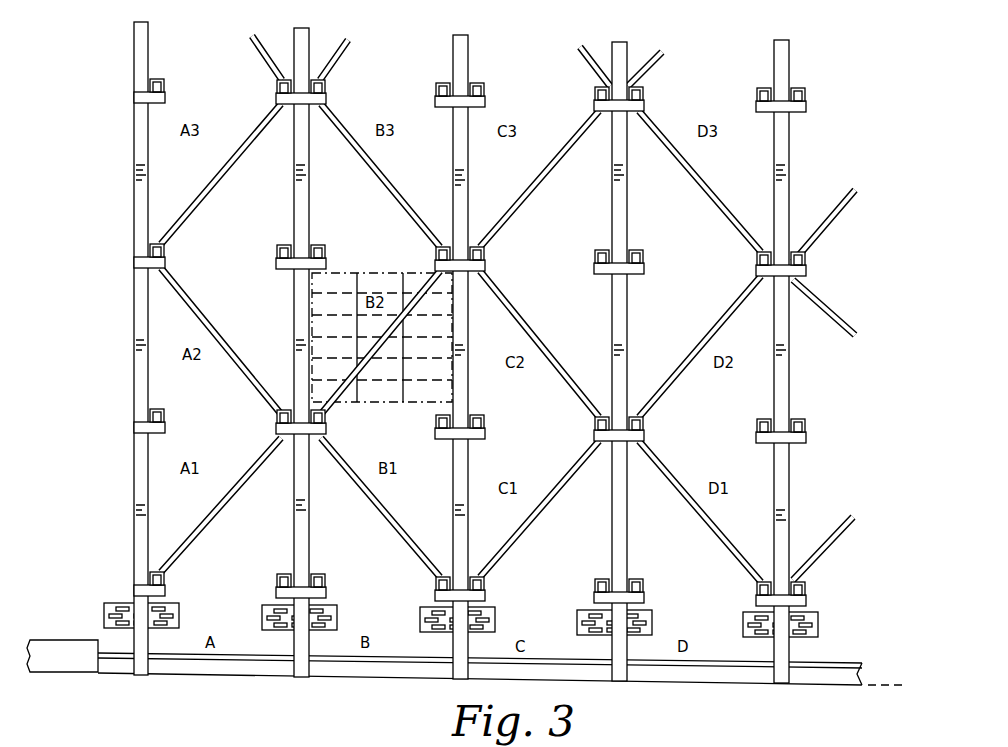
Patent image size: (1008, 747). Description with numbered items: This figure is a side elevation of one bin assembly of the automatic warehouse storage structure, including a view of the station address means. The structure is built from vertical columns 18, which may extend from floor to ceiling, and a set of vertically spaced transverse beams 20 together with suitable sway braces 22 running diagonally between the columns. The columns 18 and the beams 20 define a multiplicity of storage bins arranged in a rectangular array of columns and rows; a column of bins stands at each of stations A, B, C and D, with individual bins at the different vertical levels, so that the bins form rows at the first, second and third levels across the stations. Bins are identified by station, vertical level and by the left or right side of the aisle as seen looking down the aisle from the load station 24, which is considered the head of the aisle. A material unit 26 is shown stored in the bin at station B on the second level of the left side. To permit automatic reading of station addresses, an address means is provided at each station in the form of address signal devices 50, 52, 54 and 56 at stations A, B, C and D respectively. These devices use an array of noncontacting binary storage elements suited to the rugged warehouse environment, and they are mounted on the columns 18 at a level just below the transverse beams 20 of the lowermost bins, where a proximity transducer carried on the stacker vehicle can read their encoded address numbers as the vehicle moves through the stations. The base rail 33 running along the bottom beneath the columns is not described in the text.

The vertical columns 18 is at (136, 472).
The transverse beams 20 is at (165, 245).
The sway braces 22 is at (237, 152).
The load station 24 is at (53, 648).
The material unit 26 is at (350, 280).
The rail 33 is at (232, 665).
The address signal device 50 is at (178, 607).
The address signal device 52 is at (337, 610).
The address signal device 54 is at (497, 613).
The address signal device 56 is at (653, 613).